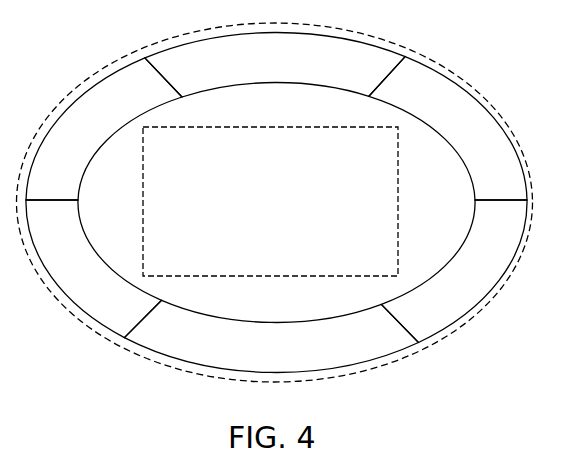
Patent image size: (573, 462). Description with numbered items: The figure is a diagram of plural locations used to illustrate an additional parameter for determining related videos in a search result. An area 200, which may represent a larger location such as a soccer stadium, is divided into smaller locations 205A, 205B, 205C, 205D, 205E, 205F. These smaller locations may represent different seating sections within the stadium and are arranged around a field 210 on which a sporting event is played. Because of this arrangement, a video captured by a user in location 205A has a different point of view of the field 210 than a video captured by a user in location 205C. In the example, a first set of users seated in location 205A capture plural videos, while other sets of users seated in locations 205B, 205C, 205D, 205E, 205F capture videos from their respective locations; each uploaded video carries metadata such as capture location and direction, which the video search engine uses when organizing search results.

The area 200 is at (80, 83).
The location 205A is at (290, 70).
The location 205B is at (482, 132).
The location 205C is at (493, 282).
The location 205D is at (290, 356).
The location 205E is at (98, 282).
The location 205F is at (108, 132).
The field 210 is at (143, 197).